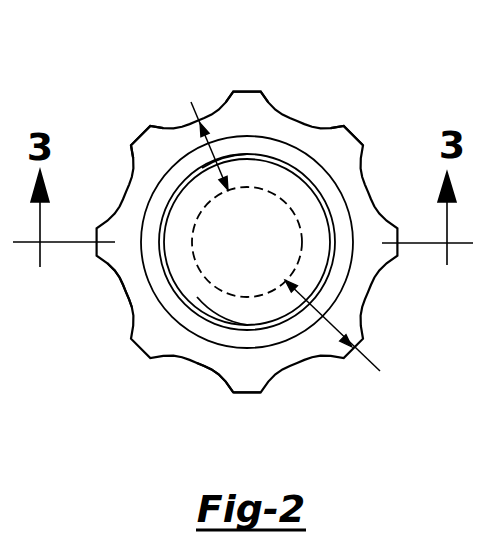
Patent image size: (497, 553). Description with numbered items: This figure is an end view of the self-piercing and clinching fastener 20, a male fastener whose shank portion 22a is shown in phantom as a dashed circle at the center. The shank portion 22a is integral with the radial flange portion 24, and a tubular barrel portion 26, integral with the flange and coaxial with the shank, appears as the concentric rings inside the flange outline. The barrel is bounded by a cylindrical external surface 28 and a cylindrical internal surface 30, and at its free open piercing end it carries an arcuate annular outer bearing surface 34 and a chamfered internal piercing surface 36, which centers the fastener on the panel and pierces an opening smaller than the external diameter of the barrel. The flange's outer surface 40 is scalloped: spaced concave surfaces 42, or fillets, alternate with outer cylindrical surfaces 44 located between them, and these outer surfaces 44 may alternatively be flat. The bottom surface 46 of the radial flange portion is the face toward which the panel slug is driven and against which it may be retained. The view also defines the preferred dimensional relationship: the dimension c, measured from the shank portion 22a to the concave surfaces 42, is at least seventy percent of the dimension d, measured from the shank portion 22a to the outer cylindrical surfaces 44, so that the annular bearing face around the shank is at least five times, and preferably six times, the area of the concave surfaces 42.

The self-piercing and clinching fastener 20 is at (321, 87).
The shank portion 22a is at (195, 225).
The radial flange portion 24 is at (245, 396).
The tubular barrel portion 26 is at (270, 340).
The cylindrical external surface 28 is at (250, 134).
The cylindrical internal surface 30 is at (318, 289).
The arcuate annular outer bearing surface 34 is at (312, 167).
The chamfered internal piercing surface 36 is at (202, 168).
The outer surface 40 is at (214, 384).
The concave surfaces 42 is at (165, 124).
The outer cylindrical surfaces 44 is at (344, 124).
The bottom surface 46 is at (213, 298).
The dimension c is at (206, 135).
The dimension d is at (339, 333).